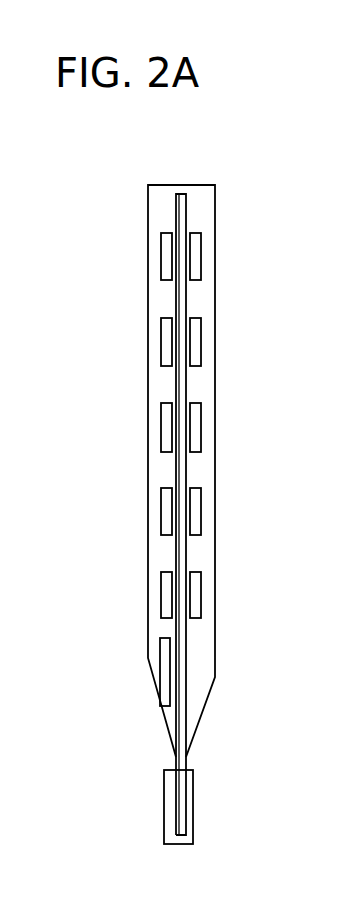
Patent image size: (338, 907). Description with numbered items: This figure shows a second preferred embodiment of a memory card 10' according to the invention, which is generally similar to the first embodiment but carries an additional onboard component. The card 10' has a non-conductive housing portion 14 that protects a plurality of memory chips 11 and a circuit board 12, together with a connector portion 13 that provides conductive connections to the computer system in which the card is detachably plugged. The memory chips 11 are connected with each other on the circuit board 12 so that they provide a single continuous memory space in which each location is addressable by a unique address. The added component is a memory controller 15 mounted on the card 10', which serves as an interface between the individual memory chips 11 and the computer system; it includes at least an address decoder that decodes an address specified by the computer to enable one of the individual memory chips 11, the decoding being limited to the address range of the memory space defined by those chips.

The memory card 10' is at (173, 483).
The memory chips 11 is at (160, 257).
The circuit board 12 is at (180, 193).
The connector portion 13 is at (167, 820).
The non-conductive housing portion 14 is at (162, 199).
The memory controller 15 is at (163, 667).